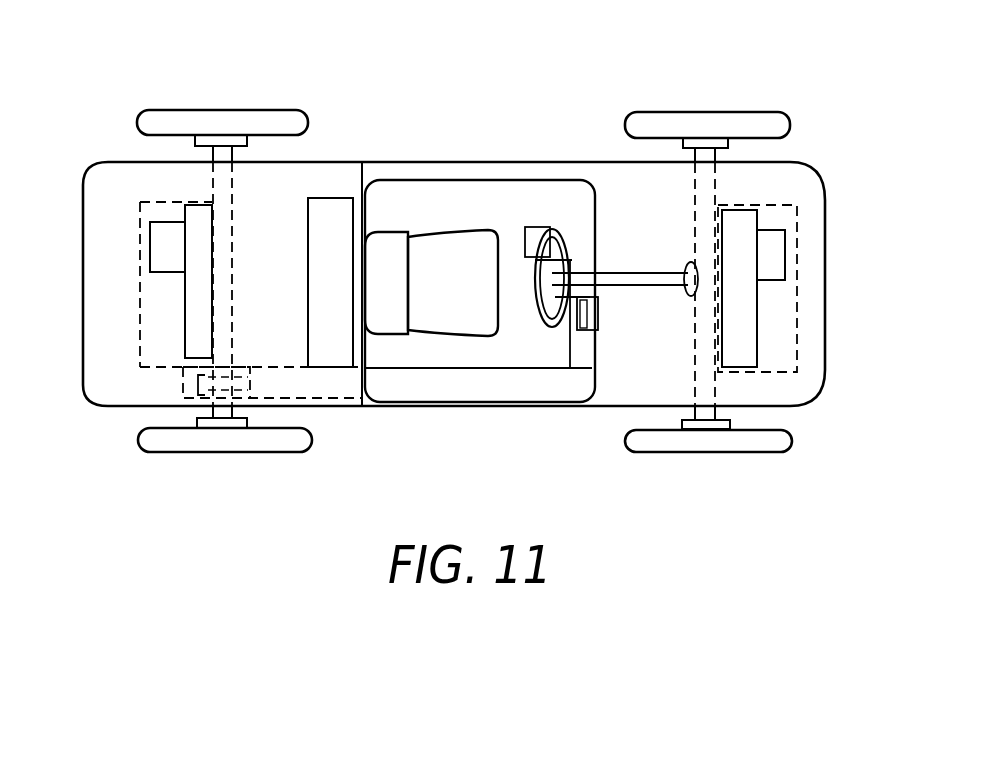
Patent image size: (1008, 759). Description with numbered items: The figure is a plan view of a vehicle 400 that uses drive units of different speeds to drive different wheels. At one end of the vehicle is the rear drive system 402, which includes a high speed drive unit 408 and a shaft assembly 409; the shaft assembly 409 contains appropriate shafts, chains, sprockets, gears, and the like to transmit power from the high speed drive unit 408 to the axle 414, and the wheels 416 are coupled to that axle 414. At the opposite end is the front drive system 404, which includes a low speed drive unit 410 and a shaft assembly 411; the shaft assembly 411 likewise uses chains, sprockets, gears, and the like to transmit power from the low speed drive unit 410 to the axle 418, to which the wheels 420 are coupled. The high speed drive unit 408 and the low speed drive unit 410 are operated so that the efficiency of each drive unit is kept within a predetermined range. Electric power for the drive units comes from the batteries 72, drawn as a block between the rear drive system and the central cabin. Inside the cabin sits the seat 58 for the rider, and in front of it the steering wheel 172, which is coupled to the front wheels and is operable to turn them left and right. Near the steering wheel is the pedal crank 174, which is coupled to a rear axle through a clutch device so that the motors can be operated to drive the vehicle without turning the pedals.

The vehicle 400 is at (568, 77).
The rear drive system 402 is at (165, 318).
The front drive system 404 is at (768, 335).
The high speed drive unit 408 is at (175, 247).
The shaft assembly 409 is at (197, 302).
The low speed drive unit 410 is at (773, 253).
The shaft assembly 411 is at (735, 348).
The batteries 72 is at (336, 208).
The axle 414 is at (226, 148).
The wheels 416 is at (187, 115).
The axle 418 is at (710, 193).
The wheels 420 is at (745, 110).
The seat 58 is at (467, 298).
The steering wheel 172 is at (570, 243).
The pedal crank 174 is at (598, 320).